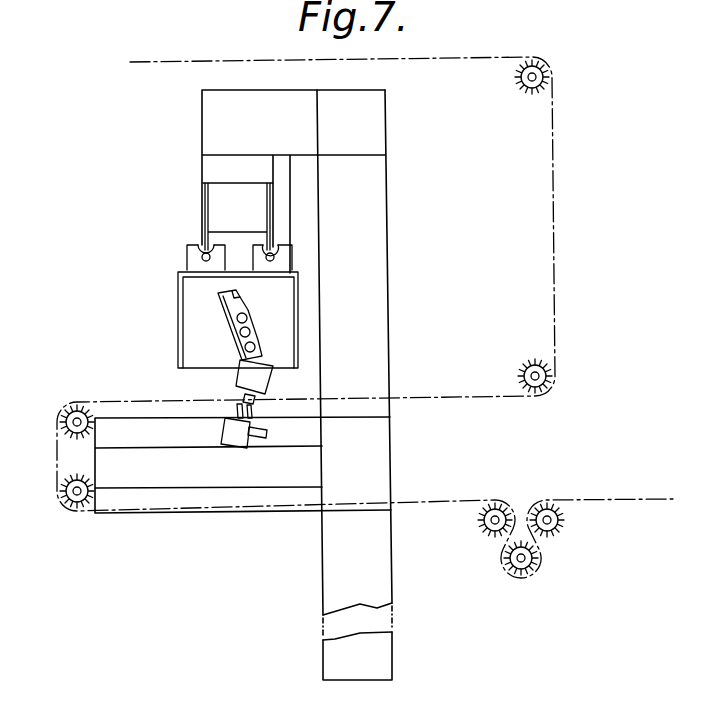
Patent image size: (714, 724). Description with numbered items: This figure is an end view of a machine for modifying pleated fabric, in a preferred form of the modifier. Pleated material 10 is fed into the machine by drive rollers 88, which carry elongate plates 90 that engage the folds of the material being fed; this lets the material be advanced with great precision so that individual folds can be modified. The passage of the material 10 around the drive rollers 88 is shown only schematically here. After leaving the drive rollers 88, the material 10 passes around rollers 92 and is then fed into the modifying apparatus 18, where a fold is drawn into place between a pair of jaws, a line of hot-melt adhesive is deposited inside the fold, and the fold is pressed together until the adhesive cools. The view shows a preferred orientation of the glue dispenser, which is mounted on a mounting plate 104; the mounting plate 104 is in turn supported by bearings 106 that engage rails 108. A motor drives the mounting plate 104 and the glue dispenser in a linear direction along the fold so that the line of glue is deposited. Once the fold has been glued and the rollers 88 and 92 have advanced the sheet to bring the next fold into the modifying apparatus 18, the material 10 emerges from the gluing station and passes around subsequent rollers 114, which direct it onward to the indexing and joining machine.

The pleated material 10 is at (621, 499).
The modifying apparatus 18 is at (238, 406).
The drive rollers 88 is at (538, 503).
The elongate plates 90 is at (486, 533).
The rollers 92 is at (62, 480).
The mounting plate 104 is at (200, 337).
The bearings 106 is at (187, 253).
The rails 108 is at (204, 251).
The subsequent rollers 114 is at (553, 75).